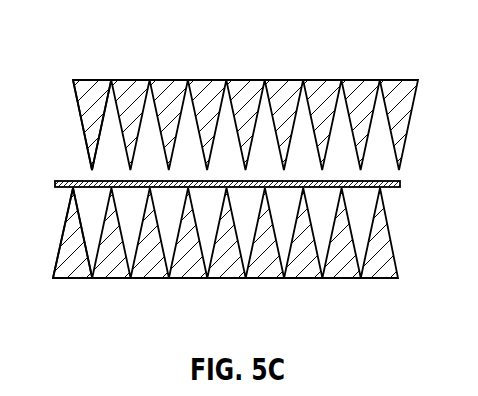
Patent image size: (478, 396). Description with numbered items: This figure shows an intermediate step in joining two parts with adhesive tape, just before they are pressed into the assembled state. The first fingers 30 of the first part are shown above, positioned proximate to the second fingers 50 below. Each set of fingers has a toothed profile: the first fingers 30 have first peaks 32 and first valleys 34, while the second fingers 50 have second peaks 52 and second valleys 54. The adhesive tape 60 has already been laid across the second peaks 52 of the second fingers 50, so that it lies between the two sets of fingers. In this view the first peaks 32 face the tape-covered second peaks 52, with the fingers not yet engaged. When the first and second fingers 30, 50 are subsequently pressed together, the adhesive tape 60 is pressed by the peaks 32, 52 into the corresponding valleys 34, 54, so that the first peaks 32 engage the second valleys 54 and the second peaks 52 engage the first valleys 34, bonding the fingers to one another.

The first fingers 30 is at (239, 100).
The first peaks 32 is at (91, 171).
The first valleys 34 is at (113, 82).
The second fingers 50 is at (239, 258).
The second peaks 52 is at (70, 190).
The second valleys 54 is at (93, 263).
The adhesive tape 60 is at (402, 182).